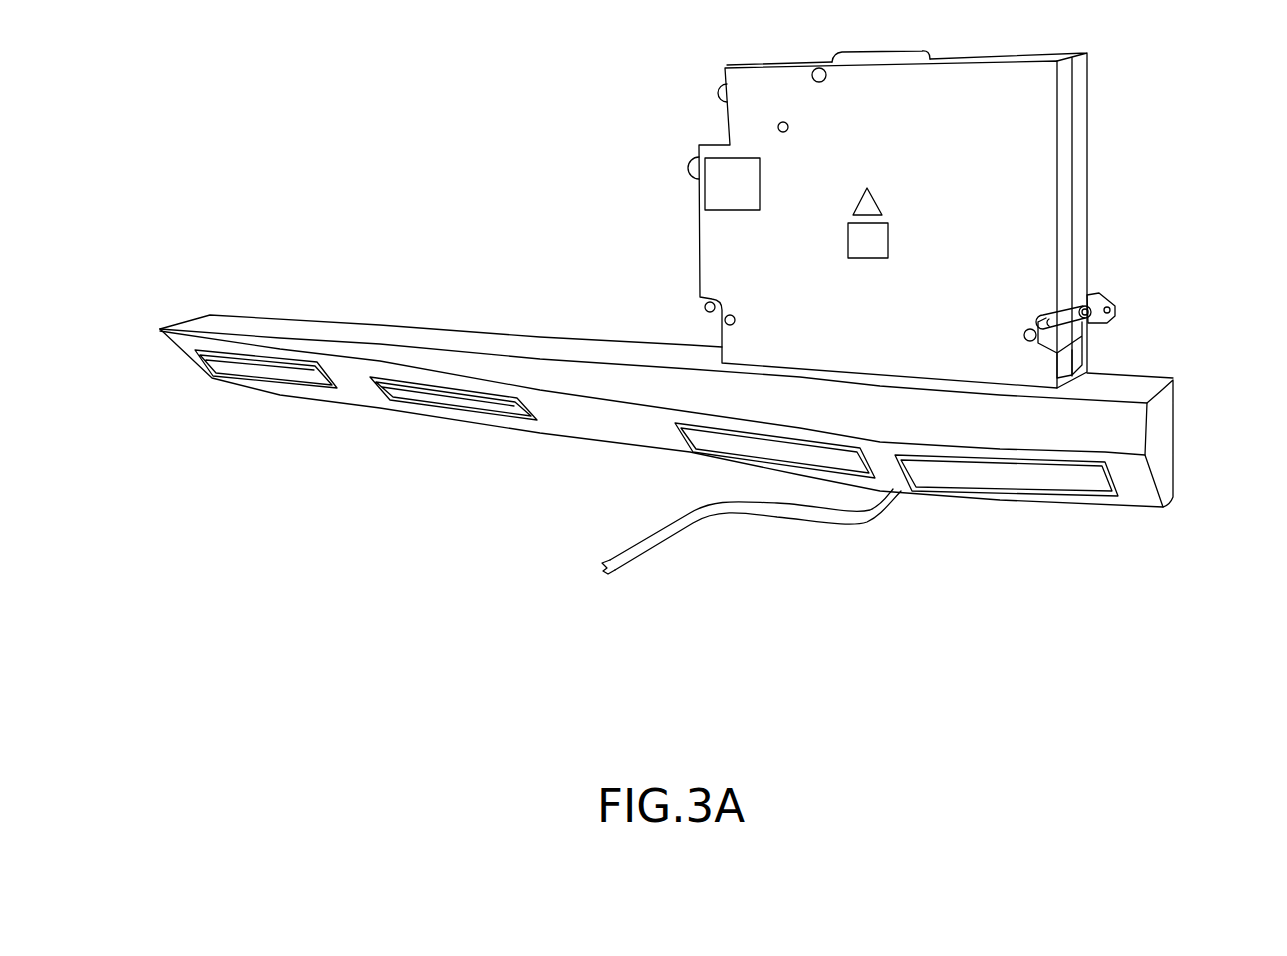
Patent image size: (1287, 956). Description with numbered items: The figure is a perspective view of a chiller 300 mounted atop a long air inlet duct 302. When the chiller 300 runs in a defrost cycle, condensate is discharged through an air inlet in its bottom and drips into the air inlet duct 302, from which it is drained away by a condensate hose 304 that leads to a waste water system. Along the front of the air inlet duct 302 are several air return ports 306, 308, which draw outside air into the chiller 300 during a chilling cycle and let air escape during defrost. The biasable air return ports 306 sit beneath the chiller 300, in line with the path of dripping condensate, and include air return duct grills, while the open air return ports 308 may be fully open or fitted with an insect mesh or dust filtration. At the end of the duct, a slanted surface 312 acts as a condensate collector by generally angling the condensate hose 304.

The chiller 300 is at (1042, 92).
The air inlet duct 302 is at (1127, 430).
The condensate hose 304 is at (636, 556).
The biasable air return port 306 is at (736, 447).
The open air return port 308 is at (258, 372).
The slanted surface 312 is at (1143, 488).